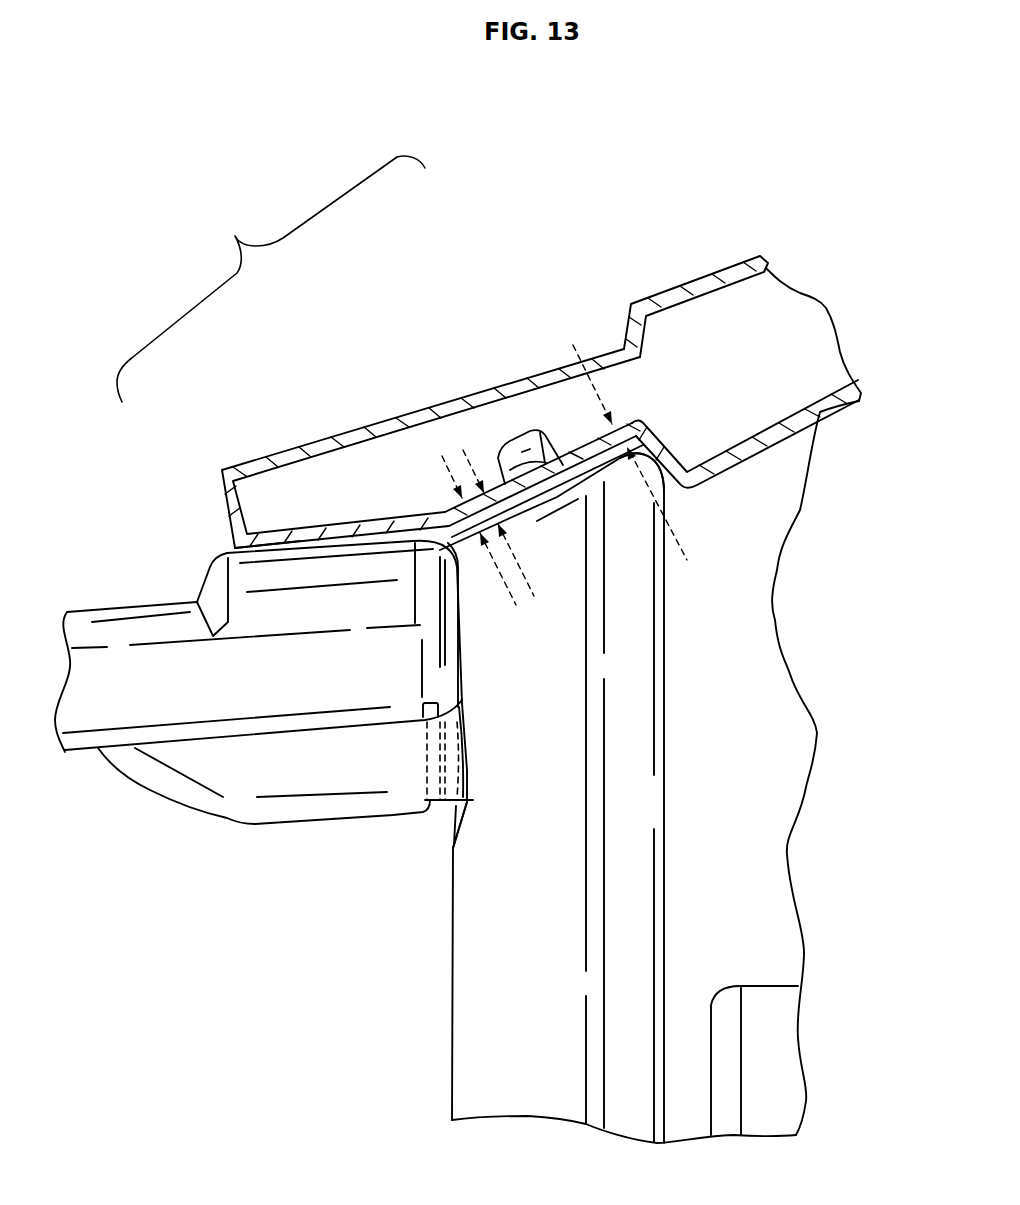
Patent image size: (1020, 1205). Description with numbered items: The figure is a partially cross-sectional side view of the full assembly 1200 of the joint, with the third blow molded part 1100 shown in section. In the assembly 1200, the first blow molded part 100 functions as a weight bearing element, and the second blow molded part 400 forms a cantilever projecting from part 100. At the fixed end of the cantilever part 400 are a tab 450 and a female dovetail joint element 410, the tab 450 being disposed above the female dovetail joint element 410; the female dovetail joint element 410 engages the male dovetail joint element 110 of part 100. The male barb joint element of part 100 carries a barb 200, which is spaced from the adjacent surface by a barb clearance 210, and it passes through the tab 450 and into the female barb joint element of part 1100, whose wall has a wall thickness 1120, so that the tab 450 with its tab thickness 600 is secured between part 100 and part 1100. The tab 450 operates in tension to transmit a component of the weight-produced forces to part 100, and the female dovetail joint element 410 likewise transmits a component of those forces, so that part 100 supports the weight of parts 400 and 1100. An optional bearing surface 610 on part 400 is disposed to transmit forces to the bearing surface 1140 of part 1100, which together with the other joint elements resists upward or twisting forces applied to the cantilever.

The first blow molded part 100 is at (743, 762).
The male dovetail joint element 110 is at (453, 800).
The barb 200 is at (540, 467).
The barb clearance 210 is at (446, 458).
The second blow molded part 400 is at (253, 797).
The female dovetail joint element 410 is at (432, 781).
The tab 450 is at (435, 520).
The tab thickness 600 is at (484, 467).
The bearing surface 610 is at (275, 555).
The third blow molded part 1100 is at (363, 488).
The wall thickness 1120 is at (680, 545).
The bearing surface 1140 is at (253, 545).
The assembly 1200 is at (271, 279).